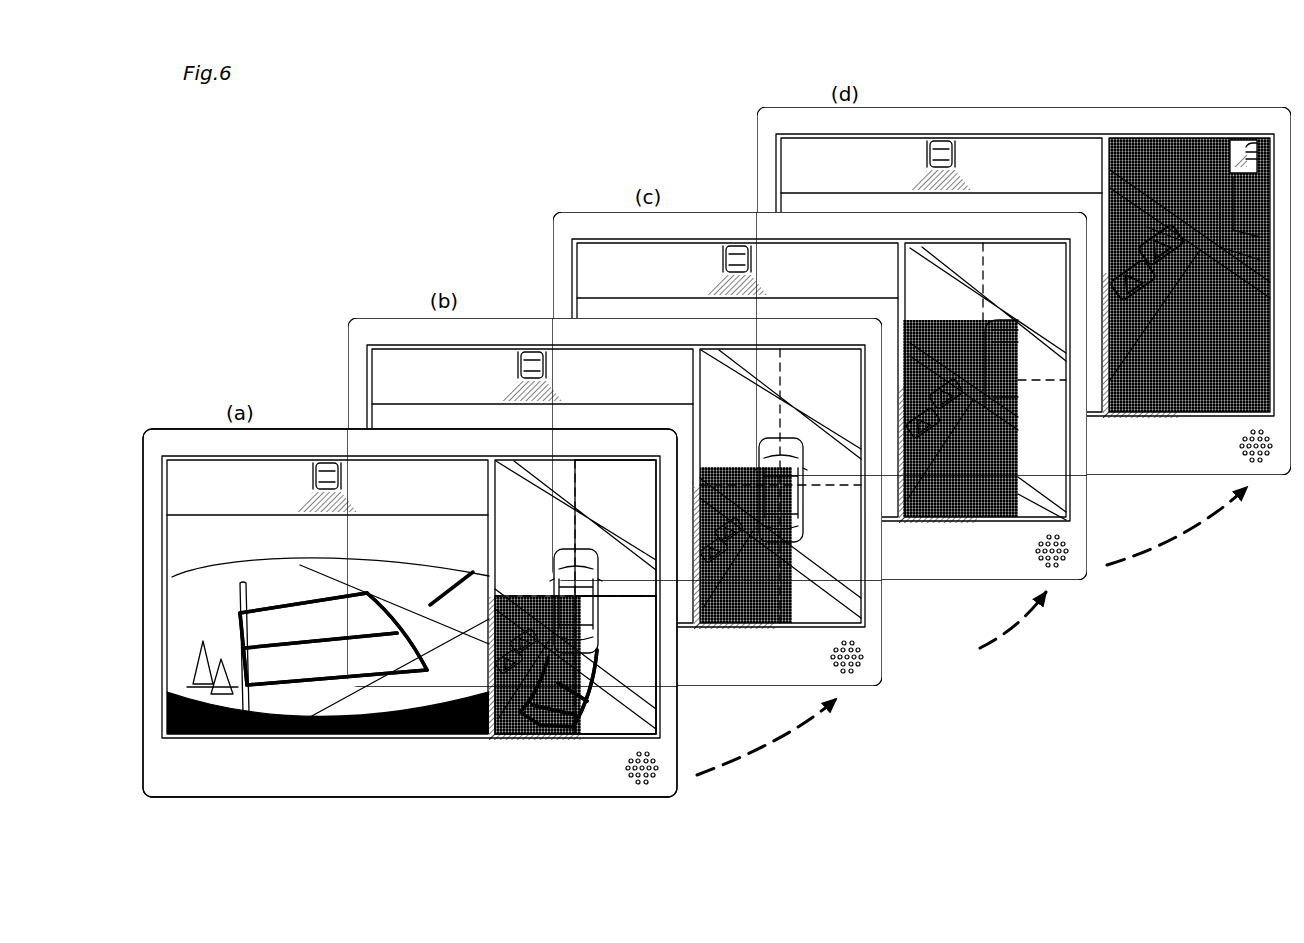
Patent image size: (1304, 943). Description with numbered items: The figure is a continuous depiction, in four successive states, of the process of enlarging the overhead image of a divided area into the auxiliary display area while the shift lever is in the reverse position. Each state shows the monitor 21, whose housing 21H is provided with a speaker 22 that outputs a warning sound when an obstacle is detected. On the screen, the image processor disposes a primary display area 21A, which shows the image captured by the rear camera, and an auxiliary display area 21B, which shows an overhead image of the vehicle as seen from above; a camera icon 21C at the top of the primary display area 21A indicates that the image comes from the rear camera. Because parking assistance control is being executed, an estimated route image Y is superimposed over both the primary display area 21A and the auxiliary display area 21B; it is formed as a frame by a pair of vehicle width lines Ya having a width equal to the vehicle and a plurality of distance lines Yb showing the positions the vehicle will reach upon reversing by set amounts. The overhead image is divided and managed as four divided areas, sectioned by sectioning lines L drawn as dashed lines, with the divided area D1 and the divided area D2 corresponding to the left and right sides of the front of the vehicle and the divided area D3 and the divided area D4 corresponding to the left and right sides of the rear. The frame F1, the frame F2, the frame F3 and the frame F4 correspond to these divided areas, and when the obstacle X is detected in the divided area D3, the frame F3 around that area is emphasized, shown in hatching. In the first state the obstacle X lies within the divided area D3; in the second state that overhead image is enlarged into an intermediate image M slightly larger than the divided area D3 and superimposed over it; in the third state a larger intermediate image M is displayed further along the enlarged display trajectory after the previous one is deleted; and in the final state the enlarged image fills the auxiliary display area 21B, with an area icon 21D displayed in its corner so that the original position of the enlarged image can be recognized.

The monitor 21 is at (192, 425).
The primary display area 21A is at (162, 565).
The auxiliary display area 21B is at (691, 400).
The camera icon 21C is at (300, 474).
The area icon 21D is at (1241, 147).
The housing 21H is at (308, 444).
The speaker 22 is at (662, 783).
The frame F1 is at (492, 499).
The frame F2 is at (652, 530).
The frame F3 is at (500, 740).
The frame F4 is at (658, 722).
The divided area D1 is at (519, 492).
The divided area D2 is at (627, 474).
The divided area D3 is at (514, 615).
The divided area D4 is at (640, 689).
The sectioning lines L is at (545, 600).
The intermediate image M is at (745, 609).
The obstacle X is at (187, 683).
The estimated route image Y is at (323, 595).
The vehicle width lines Ya is at (240, 633).
The distance lines Yb is at (297, 642).